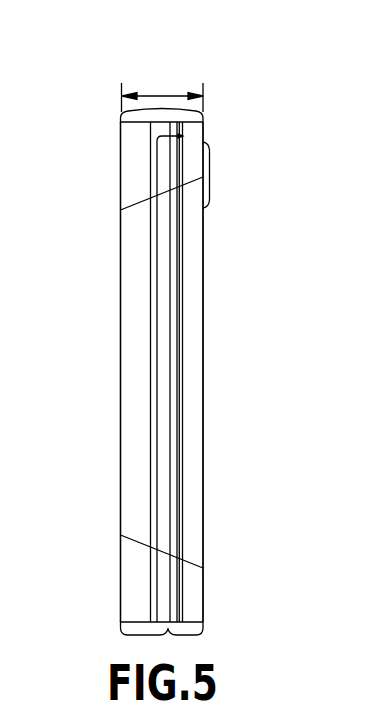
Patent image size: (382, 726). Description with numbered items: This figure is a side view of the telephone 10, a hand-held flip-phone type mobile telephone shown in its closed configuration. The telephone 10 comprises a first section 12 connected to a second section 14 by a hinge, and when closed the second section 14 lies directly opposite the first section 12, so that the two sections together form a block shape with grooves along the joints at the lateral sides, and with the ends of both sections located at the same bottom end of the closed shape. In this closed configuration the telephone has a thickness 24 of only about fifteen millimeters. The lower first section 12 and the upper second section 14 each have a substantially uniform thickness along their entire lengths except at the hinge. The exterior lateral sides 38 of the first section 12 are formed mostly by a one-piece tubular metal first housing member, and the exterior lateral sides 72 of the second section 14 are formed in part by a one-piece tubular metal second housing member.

The telephone 10 is at (205, 266).
The first section 12 is at (120, 430).
The second section 14 is at (203, 388).
The thickness 24 is at (163, 95).
The exterior lateral sides 38 is at (133, 475).
The exterior lateral sides 72 is at (197, 483).